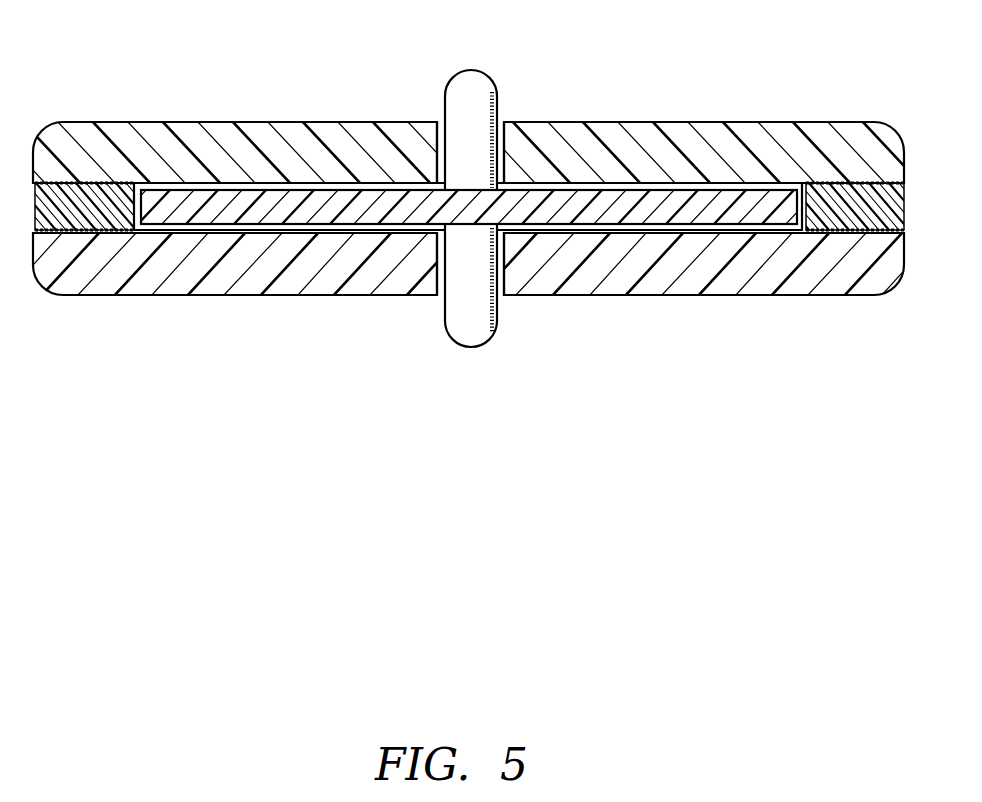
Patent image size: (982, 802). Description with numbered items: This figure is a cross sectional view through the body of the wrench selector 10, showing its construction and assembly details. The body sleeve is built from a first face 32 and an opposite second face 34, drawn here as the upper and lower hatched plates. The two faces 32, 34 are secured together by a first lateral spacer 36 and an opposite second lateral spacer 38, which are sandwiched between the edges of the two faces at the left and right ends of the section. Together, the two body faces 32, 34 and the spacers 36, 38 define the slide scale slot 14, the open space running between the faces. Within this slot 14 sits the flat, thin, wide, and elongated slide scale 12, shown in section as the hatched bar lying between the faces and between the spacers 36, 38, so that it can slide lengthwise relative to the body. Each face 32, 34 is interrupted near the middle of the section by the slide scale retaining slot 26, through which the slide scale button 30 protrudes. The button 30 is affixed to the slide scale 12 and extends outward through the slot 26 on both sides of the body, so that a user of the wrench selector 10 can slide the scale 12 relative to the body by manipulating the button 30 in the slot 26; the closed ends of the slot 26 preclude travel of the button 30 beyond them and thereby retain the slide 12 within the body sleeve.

The wrench selector 10 is at (397, 521).
The slide scale 12 is at (305, 192).
The slide scale slot 14 is at (337, 229).
The slide scale retaining slot 26 is at (502, 122).
The slide scale button 30 is at (460, 73).
The first face 32 is at (772, 297).
The second face 34 is at (733, 88).
The first lateral spacer 36 is at (93, 232).
The second lateral spacer 38 is at (843, 185).